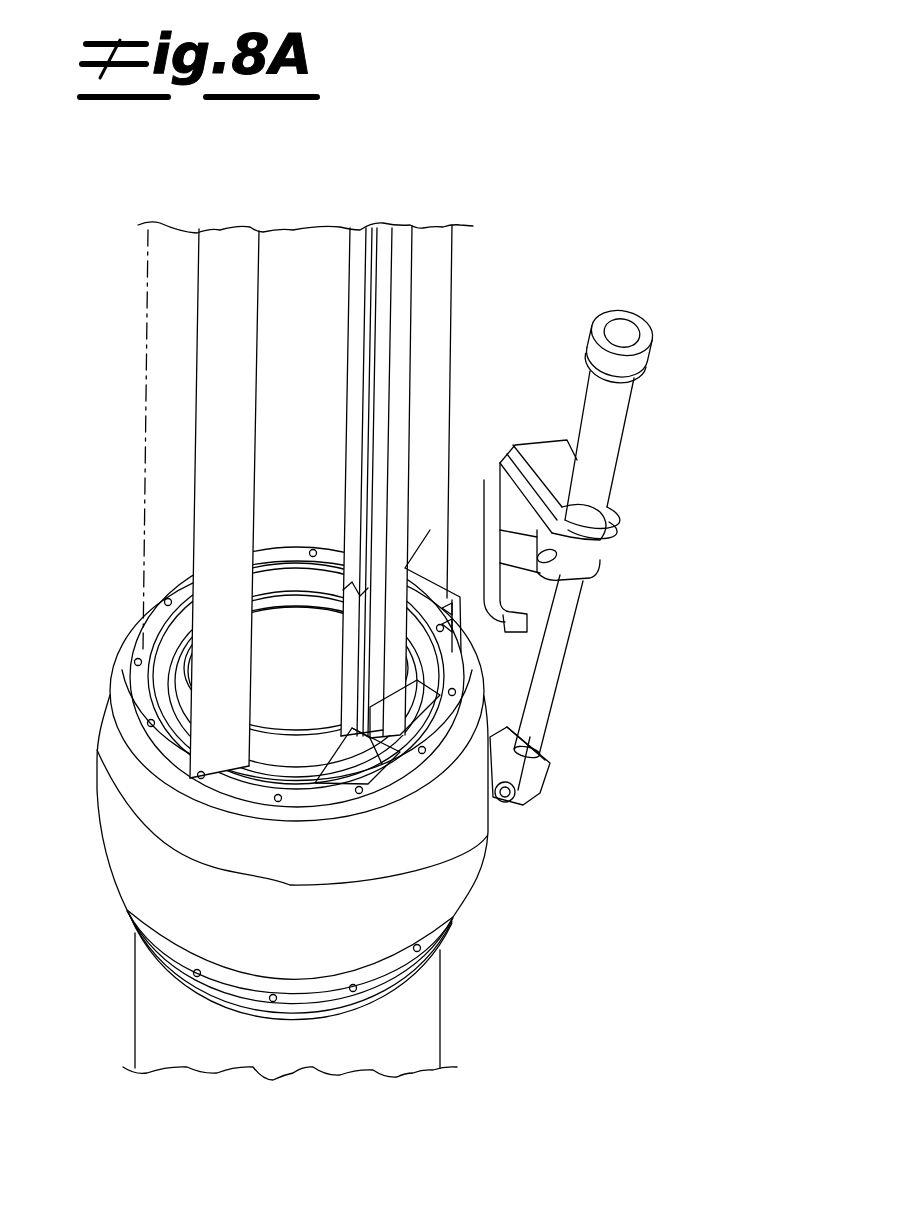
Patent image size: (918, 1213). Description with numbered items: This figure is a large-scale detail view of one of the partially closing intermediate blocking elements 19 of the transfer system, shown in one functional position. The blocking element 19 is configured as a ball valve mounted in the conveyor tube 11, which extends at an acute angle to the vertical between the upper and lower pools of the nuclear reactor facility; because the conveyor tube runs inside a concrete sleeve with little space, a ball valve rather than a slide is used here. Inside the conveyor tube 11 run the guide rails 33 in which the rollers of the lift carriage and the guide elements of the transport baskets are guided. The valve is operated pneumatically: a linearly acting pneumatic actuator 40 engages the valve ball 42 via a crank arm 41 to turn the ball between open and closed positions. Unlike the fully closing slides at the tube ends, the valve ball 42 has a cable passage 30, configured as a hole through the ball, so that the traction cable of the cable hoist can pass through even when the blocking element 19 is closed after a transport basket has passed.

The conveyor tube 11 is at (150, 383).
The guide rails 33 is at (242, 388).
The partially closing intermediate element 19 is at (107, 906).
The valve ball 42 is at (413, 703).
The linearly acting pneumatic actuator 40 is at (657, 392).
The cable passage 30 is at (383, 732).
The crank arm 41 is at (522, 807).